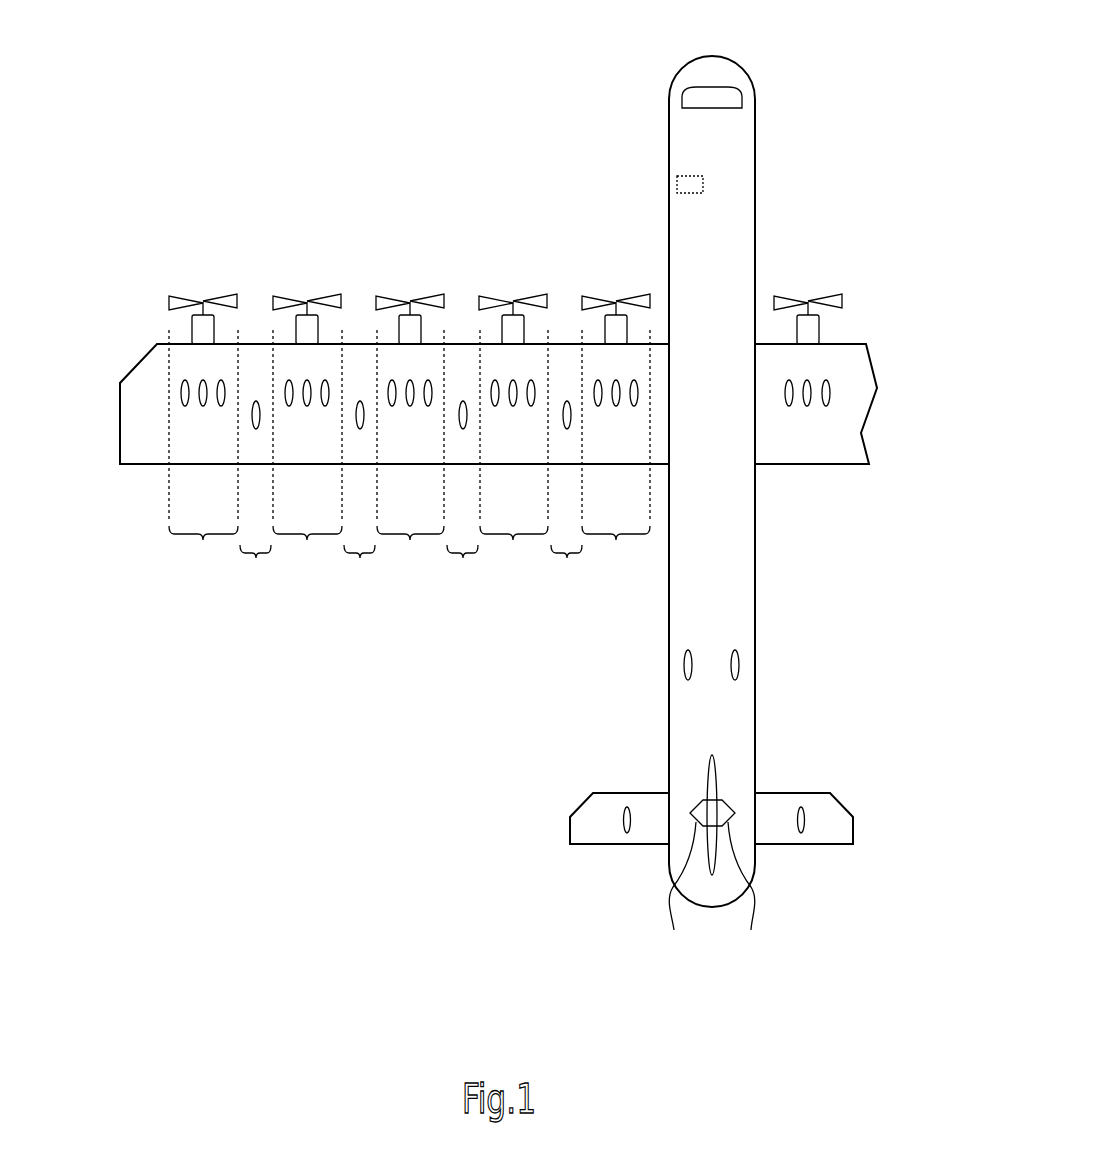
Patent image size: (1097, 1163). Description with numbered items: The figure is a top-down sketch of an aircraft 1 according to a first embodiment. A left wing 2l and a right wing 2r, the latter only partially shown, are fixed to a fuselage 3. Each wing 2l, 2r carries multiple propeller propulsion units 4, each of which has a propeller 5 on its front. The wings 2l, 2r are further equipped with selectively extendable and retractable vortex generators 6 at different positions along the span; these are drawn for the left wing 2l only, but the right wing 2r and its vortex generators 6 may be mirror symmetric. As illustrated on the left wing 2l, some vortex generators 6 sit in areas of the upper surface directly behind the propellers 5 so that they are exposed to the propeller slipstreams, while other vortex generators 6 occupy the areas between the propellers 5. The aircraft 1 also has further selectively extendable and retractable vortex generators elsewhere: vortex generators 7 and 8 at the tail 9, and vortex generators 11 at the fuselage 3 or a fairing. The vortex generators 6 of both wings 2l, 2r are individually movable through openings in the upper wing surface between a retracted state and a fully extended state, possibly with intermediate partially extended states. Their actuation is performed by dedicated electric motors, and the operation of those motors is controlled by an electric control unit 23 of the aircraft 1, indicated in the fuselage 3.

The aircraft 1 is at (412, 78).
The left wing 2l is at (142, 374).
The right wing 2r is at (775, 466).
The fuselage 3 is at (669, 118).
The propeller propulsion unit 4 is at (822, 338).
The propeller 5 is at (203, 297).
The vortex generator 6 is at (256, 400).
The vortex generator 7 is at (620, 820).
The vortex generator 8 is at (711, 894).
The tail 9 is at (685, 864).
The vortex generator 11 is at (683, 664).
The electric control unit 23 is at (677, 185).